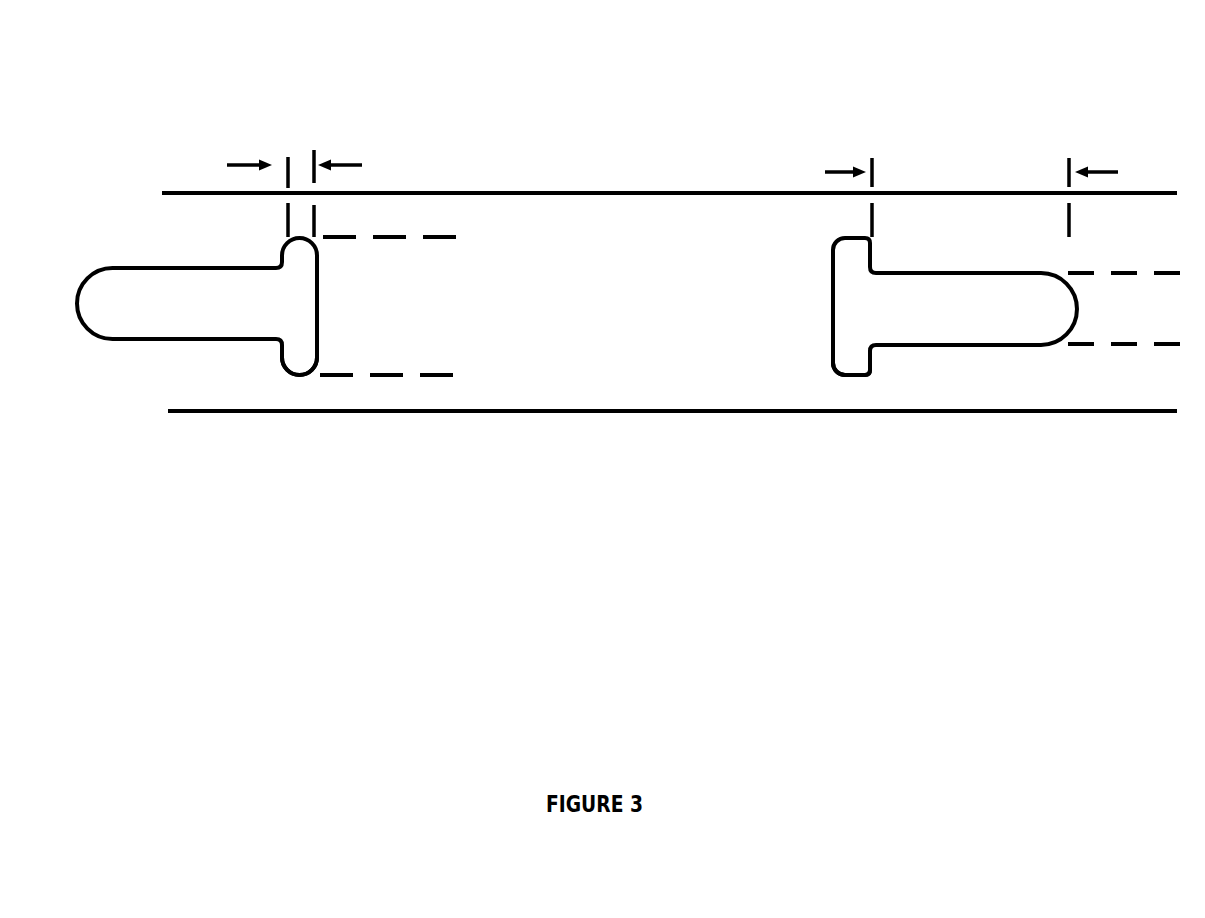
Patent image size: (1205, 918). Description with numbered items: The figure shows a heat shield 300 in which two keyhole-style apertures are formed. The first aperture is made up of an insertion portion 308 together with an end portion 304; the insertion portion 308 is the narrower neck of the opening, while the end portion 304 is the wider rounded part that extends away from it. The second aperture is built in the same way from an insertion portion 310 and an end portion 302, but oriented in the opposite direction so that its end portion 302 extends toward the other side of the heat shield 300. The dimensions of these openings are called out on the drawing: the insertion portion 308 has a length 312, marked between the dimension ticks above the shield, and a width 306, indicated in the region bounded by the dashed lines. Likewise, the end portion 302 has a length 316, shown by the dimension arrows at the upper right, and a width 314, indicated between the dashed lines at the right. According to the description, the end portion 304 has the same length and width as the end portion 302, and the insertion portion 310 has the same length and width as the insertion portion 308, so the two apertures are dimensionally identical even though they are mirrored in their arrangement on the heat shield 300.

The heat shield 300 is at (140, 105).
The end portion 302 is at (901, 291).
The end portion 304 is at (128, 293).
The width 306 is at (462, 307).
The insertion portion 308 is at (304, 361).
The insertion portion 310 is at (856, 363).
The length 312 is at (300, 153).
The width 314 is at (1121, 338).
The length 316 is at (993, 170).